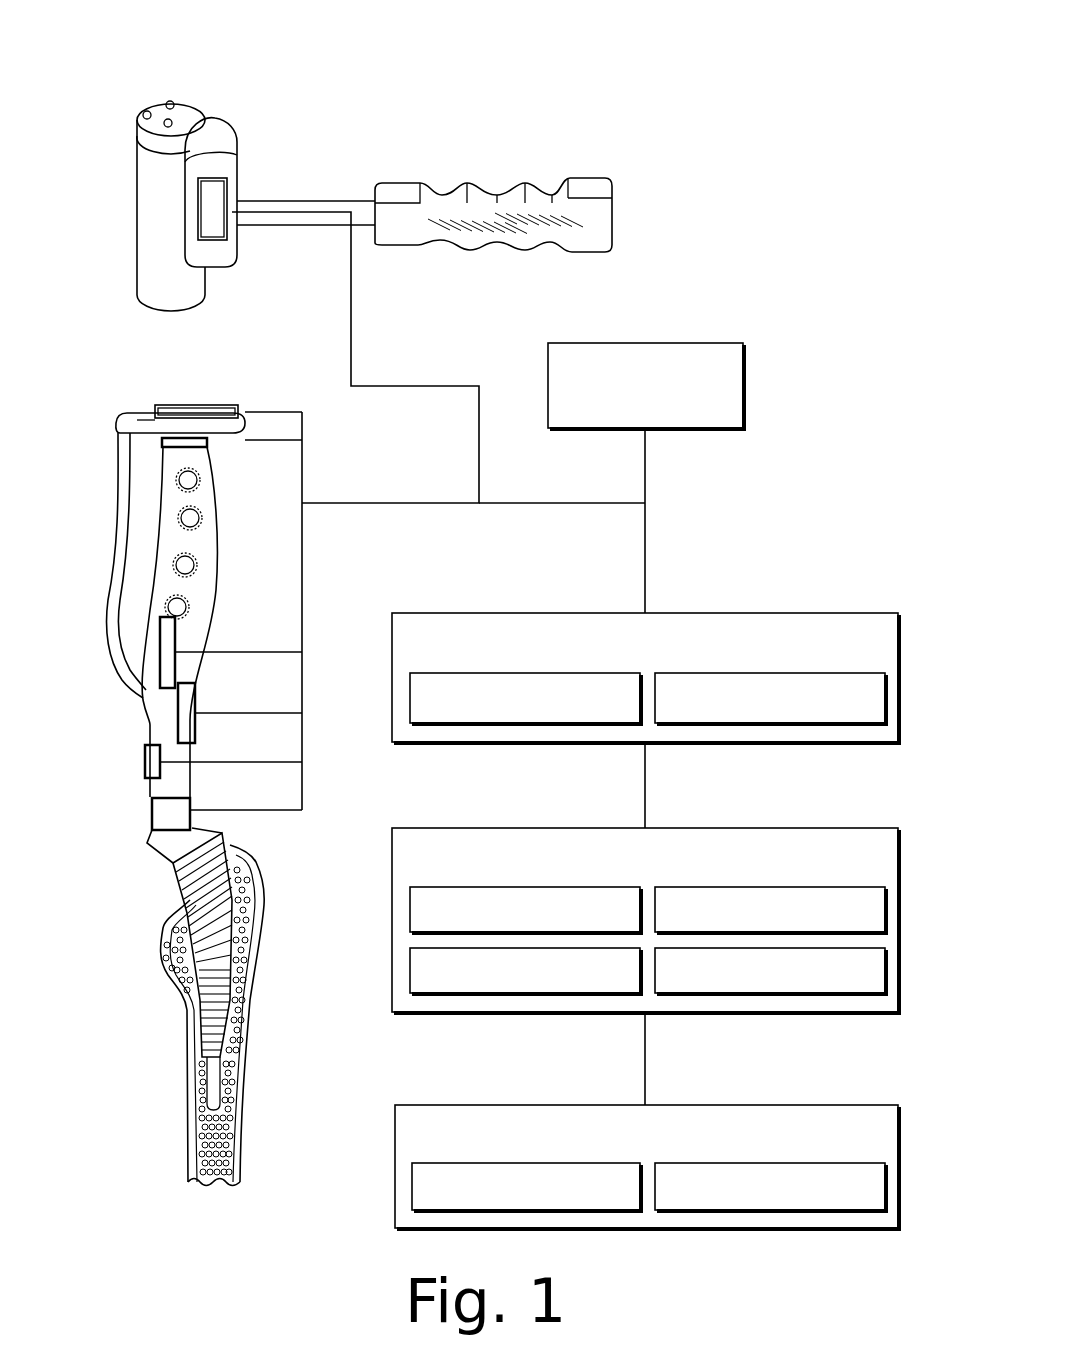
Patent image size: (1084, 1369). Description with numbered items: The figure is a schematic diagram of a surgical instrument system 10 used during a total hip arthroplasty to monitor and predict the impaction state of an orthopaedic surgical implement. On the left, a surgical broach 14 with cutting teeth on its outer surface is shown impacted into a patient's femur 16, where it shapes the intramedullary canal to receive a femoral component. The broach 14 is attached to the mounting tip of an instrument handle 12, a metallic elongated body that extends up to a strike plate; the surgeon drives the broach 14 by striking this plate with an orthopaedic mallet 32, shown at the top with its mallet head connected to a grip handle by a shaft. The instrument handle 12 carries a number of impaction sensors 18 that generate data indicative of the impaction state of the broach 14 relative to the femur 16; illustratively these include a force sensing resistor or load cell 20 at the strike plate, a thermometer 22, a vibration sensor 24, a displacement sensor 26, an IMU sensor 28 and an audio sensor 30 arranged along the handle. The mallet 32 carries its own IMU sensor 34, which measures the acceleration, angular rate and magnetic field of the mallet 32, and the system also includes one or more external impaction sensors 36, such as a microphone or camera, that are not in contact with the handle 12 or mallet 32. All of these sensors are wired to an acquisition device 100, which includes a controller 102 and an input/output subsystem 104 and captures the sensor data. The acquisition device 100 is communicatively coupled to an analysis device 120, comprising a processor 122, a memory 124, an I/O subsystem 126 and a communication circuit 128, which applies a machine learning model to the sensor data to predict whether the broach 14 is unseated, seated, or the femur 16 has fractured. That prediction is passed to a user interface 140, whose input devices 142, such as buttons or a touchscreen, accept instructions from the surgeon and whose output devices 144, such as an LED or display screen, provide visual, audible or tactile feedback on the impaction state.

The surgical instrument system 10 is at (872, 89).
The instrument handle 12 is at (197, 539).
The surgical broach 14 is at (179, 870).
The femur 16 is at (189, 1163).
The impaction sensors 18 is at (76, 381).
The force sensing resistor and/or load cell 20 is at (152, 412).
The thermometer 22 is at (160, 443).
The vibration sensor 24 is at (158, 650).
The displacement sensor 26 is at (178, 714).
The inertial measurement unit sensor 28 is at (145, 764).
The audio sensor 30 is at (152, 814).
The orthopaedic mallet 32 is at (150, 217).
The IMU sensor 34 is at (215, 178).
The external impaction sensor 36 is at (694, 343).
The acquisition device 100 is at (655, 651).
The controller 102 is at (410, 697).
The input/output subsystem 104 is at (885, 696).
The analysis device 120 is at (654, 893).
The processor 122 is at (410, 909).
The memory 124 is at (885, 907).
The I/O subsystem 126 is at (410, 971).
The communication circuit 128 is at (885, 969).
The user interface 140 is at (655, 1141).
The input device 142 is at (412, 1188).
The output device 144 is at (885, 1186).